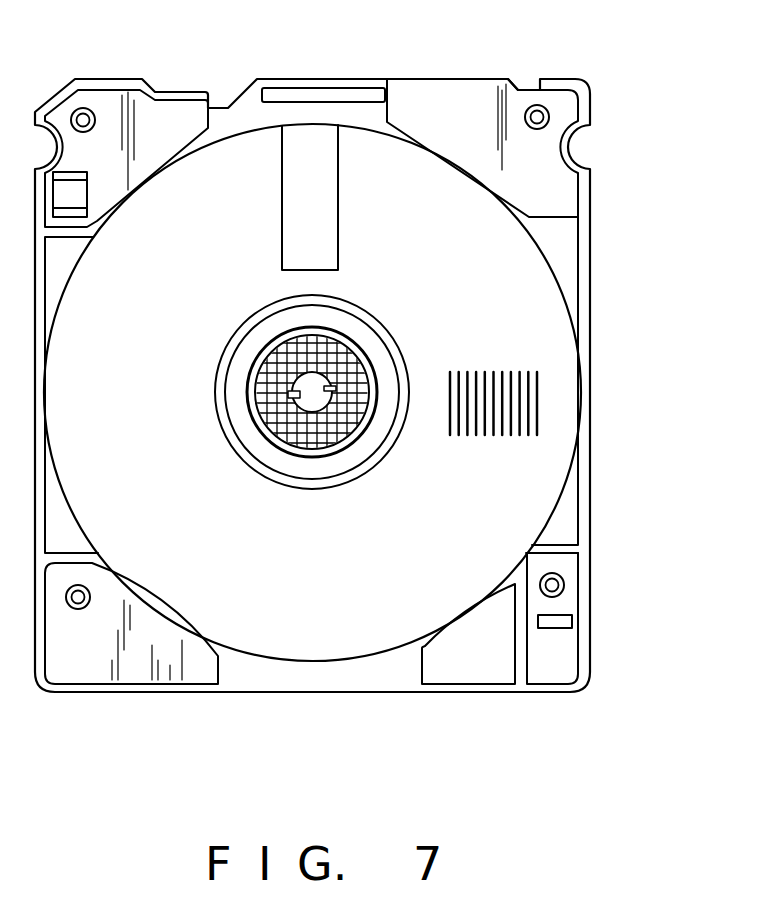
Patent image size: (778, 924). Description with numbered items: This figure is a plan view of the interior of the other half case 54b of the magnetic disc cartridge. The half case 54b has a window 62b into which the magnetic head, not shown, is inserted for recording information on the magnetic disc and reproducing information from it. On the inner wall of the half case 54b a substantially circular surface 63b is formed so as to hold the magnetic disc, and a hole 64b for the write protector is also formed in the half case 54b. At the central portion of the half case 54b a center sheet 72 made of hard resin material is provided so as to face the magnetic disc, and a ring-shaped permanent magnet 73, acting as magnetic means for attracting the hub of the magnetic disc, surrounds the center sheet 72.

The half case 54b is at (472, 92).
The window 62b is at (314, 128).
The substantially circular surface 63b is at (528, 523).
The hole 64b is at (572, 622).
The center sheet 72 is at (326, 387).
The ring-shaped permanent magnet 73 is at (332, 342).